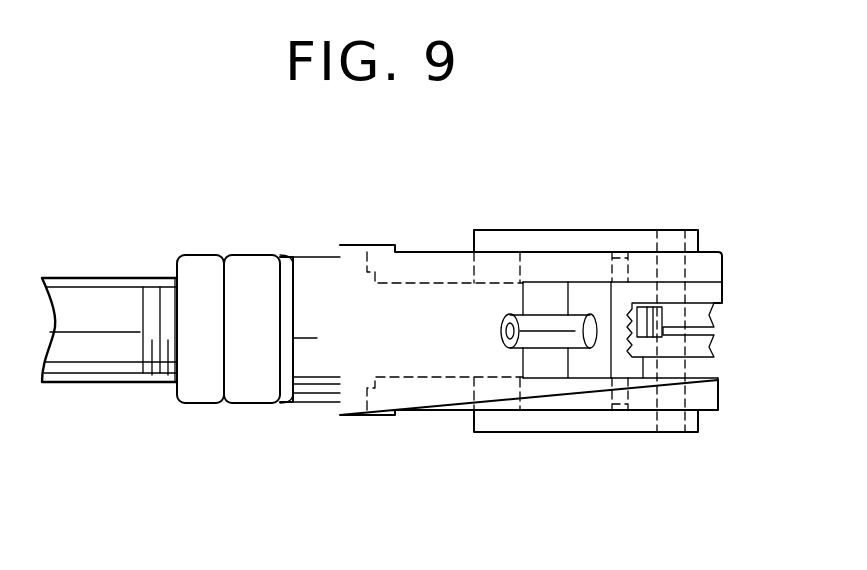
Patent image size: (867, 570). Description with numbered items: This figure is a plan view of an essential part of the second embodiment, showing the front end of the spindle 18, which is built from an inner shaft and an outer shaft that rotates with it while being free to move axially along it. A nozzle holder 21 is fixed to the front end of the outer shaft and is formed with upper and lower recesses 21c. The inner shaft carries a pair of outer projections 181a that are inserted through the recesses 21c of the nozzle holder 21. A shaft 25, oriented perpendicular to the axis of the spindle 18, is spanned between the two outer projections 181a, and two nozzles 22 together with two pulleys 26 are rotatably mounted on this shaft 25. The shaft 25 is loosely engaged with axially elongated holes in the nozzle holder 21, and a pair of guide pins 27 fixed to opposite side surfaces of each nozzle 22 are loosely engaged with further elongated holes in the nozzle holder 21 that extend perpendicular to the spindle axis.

The spindle 18 is at (97, 282).
The nozzle holder 21 is at (350, 247).
The recesses 21c is at (430, 248).
The nozzle 22 is at (545, 313).
The shaft 25 is at (688, 378).
The pulley 26 is at (715, 343).
The guide pin 27 is at (615, 243).
The outer projection 181a is at (635, 237).